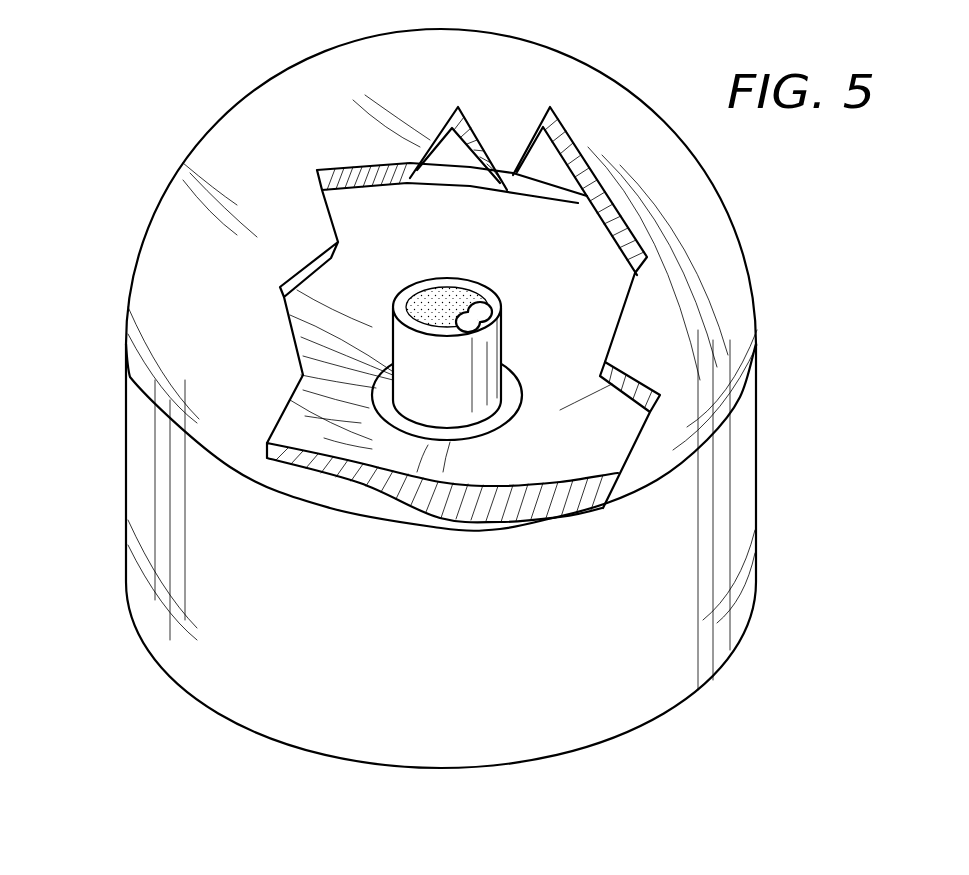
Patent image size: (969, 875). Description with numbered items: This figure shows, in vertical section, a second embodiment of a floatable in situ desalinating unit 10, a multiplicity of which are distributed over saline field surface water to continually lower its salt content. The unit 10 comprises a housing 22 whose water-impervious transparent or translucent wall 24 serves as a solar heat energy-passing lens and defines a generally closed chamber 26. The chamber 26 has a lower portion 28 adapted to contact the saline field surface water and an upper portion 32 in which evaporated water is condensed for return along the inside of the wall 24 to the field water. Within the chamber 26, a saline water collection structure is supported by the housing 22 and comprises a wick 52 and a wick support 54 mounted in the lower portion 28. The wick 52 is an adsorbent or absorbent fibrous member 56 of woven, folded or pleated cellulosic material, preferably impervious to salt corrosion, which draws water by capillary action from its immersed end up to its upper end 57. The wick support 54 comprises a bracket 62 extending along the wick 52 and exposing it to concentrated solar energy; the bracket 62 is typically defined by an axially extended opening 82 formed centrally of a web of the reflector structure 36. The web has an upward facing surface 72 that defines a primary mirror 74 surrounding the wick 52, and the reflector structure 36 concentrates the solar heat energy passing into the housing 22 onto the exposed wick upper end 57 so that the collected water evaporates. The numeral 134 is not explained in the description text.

The unit 10 is at (167, 192).
The housing 22 is at (733, 252).
The wall 24 is at (271, 165).
The chamber 26 is at (550, 185).
The lower portion 28 is at (750, 497).
The upper portion 32 is at (143, 282).
The reflector structure 36 is at (562, 352).
The wick 52 is at (440, 283).
The wick support 54 is at (397, 332).
The fibrous member 56 is at (480, 300).
The upper end 57 is at (444, 298).
The bracket 62 is at (438, 383).
The upward facing surface 72 is at (503, 473).
The primary mirror 74 is at (567, 440).
The opening 82 is at (480, 322).
The chamber 134 is at (513, 315).